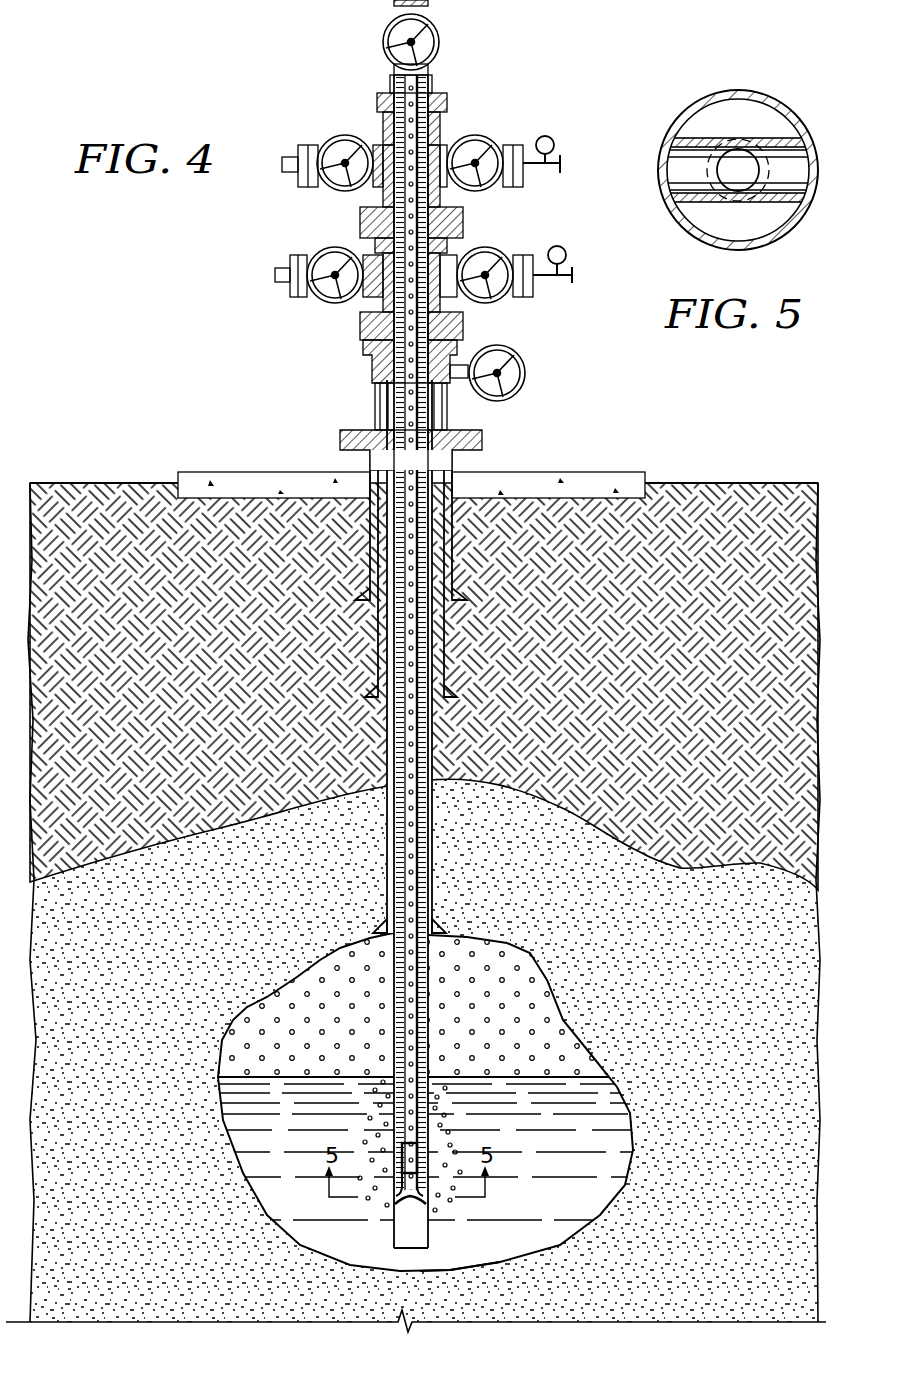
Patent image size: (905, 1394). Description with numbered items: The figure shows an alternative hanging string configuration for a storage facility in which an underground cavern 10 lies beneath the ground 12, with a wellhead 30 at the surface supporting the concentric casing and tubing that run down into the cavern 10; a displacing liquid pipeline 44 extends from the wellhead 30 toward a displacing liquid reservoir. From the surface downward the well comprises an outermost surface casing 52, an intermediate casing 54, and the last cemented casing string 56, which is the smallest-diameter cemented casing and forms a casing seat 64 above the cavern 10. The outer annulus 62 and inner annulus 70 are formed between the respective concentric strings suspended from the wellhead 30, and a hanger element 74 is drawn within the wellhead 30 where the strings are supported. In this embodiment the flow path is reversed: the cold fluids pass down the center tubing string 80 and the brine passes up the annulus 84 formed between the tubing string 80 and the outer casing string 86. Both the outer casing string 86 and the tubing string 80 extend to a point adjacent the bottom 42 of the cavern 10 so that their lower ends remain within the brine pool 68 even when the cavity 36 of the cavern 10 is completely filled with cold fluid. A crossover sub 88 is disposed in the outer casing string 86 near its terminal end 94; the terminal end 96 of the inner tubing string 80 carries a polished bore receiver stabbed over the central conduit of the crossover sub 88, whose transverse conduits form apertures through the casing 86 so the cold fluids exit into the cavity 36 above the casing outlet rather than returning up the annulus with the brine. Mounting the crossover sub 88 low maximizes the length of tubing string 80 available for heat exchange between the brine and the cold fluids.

In FIG. 4, the underground cavern 10 is at (228, 1016).
In FIG. 4, the ground 12 is at (712, 486).
In FIG. 4, the wellhead 30 is at (522, 86).
In FIG. 4, the cavity 36 is at (553, 1030).
In FIG. 4, the bottom of cavern 42 is at (466, 1268).
In FIG. 4, the displacing liquid pipeline 44 is at (530, 178).
In FIG. 4, the outermost surface casing 52 is at (455, 548).
In FIG. 4, the intermediate casing 54 is at (444, 628).
In FIG. 4, the last cemented casing string 56 is at (420, 763).
In FIG. 4, the outer annulus 62 is at (430, 718).
In FIG. 4, the casing seat 64 is at (445, 941).
In FIG. 4, the brine pool 68 is at (473, 1108).
In FIG. 4, the inner annulus 70 is at (398, 419).
In FIG. 4, the tubing hanger 74 is at (408, 363).
In FIG. 4, the center tubing string 80 is at (415, 866).
In FIG. 5, the center tubing string 80 is at (702, 176).
In FIG. 4, the annulus 84 is at (420, 889).
In FIG. 4, the outer casing string 86 is at (428, 843).
In FIG. 5, the outer casing string 86 is at (774, 98).
In FIG. 4, the crossover sub 88 is at (414, 1214).
In FIG. 4, the terminal end of outer casing string 94 is at (393, 1249).
In FIG. 4, the terminal end of inner tubing string 96 is at (400, 1143).